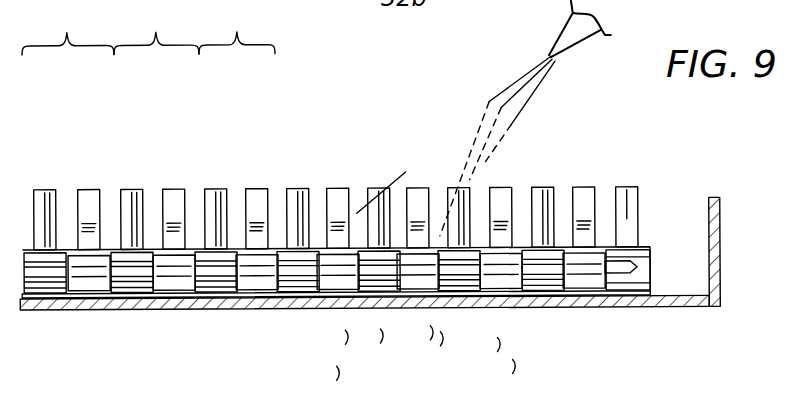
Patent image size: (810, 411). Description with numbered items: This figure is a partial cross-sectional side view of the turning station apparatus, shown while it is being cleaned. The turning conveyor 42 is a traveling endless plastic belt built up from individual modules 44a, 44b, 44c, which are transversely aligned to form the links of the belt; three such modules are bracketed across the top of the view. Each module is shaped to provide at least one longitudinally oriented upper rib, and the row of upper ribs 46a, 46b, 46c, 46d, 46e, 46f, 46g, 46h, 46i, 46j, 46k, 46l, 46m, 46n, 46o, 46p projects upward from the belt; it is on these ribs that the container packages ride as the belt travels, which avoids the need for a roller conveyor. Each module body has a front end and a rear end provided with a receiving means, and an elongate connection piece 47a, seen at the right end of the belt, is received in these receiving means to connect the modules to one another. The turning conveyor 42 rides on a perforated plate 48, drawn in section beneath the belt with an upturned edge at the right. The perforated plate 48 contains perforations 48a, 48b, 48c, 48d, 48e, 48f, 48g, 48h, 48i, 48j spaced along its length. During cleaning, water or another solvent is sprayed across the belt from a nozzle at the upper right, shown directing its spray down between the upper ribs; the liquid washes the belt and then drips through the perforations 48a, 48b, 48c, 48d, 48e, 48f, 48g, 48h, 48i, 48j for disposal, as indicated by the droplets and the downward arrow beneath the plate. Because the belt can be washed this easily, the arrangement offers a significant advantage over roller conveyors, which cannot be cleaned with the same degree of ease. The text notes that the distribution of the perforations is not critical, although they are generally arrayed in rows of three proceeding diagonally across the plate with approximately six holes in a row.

The turning conveyor 42 is at (650, 248).
The module 44a is at (68, 31).
The module 44b is at (157, 31).
The module 44c is at (238, 31).
The upper rib 46a is at (625, 205).
The upper rib 46b is at (585, 200).
The upper rib 46c is at (547, 200).
The upper rib 46d is at (513, 207).
The upper rib 46e is at (500, 200).
The upper rib 46f is at (450, 190).
The upper rib 46g is at (418, 198).
The upper rib 46h is at (380, 200).
The upper rib 46i is at (340, 200).
The upper rib 46j is at (296, 202).
The upper rib 46k is at (262, 198).
The upper rib 46l is at (214, 200).
The upper rib 46m is at (172, 200).
The upper rib 46n is at (132, 203).
The upper rib 46o is at (90, 200).
The upper rib 46p is at (45, 204).
The elongate connection piece 47a is at (640, 267).
The perforated plate 48 is at (689, 293).
The perforation 48a is at (655, 308).
The perforation 48b is at (590, 308).
The perforation 48c is at (528, 308).
The perforation 48d is at (465, 308).
The perforation 48e is at (385, 308).
The perforation 48f is at (330, 352).
The perforation 48g is at (250, 308).
The perforation 48h is at (186, 308).
The perforation 48i is at (113, 308).
The perforation 48j is at (48, 308).